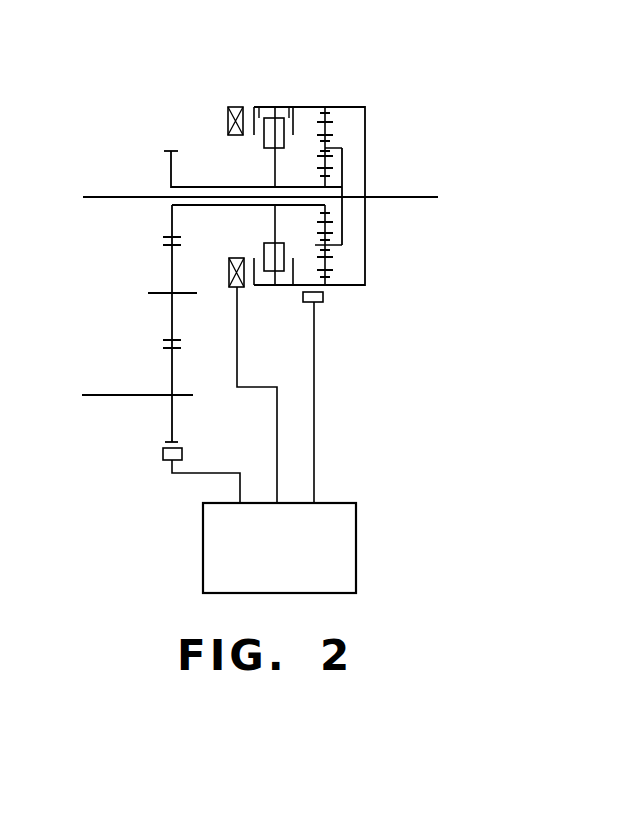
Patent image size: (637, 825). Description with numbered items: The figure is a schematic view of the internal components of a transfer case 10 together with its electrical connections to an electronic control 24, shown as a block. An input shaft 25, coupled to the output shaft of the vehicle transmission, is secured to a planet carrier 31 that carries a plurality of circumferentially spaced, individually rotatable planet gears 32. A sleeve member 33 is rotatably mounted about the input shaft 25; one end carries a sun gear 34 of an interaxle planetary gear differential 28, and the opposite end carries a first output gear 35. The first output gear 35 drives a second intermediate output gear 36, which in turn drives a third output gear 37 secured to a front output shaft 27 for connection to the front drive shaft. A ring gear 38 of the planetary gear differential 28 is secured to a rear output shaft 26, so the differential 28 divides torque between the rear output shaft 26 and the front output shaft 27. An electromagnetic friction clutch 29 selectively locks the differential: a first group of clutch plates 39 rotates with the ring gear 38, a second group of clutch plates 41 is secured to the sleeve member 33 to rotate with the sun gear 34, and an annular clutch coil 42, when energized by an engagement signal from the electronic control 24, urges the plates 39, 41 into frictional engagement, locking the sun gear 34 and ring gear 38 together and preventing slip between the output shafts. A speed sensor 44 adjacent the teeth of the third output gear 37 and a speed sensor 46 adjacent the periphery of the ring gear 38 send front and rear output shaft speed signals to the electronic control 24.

The transfer case 10 is at (458, 114).
The electronic control 24 is at (357, 537).
The input shaft 25 is at (112, 198).
The rear output shaft 26 is at (420, 198).
The front output shaft 27 is at (112, 396).
The planetary gear differential 28 is at (344, 130).
The electromagnetic friction clutch 29 is at (256, 91).
The planet carrier 31 is at (343, 183).
The planet gears 32 is at (326, 158).
The sleeve member 33 is at (203, 186).
The sun gear 34 is at (330, 215).
The first output gear 35 is at (170, 165).
The second intermediate output gear 36 is at (167, 267).
The third output gear 37 is at (170, 363).
The ring gear 38 is at (330, 108).
The first group of clutch plates 39 is at (278, 117).
The second group of clutch plates 41 is at (263, 148).
The annular clutch coil 42 is at (228, 110).
The speed sensor 44 is at (163, 453).
The speed sensor 46 is at (323, 302).